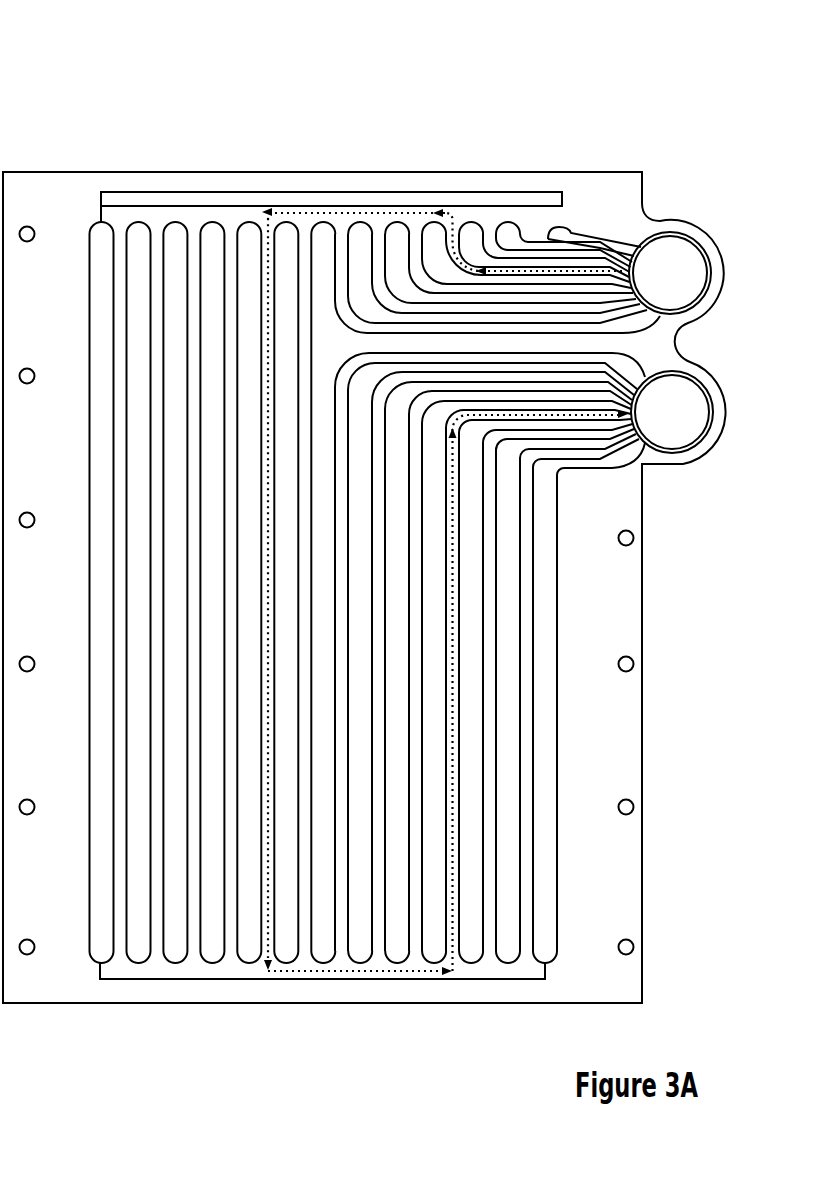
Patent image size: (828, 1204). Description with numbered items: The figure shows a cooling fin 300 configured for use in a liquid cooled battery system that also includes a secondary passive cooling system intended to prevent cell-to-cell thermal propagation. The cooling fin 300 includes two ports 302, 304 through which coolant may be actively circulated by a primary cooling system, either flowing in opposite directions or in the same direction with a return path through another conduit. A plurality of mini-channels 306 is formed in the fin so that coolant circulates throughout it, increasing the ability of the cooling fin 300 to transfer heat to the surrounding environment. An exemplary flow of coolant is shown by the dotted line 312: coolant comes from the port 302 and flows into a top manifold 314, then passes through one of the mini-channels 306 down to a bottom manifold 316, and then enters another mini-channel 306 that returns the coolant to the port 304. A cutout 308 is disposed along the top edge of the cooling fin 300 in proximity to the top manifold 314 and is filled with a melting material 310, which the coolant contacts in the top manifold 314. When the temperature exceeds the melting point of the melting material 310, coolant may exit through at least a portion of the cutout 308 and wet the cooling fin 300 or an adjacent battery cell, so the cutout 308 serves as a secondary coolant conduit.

The cooling fin 300 is at (92, 60).
The port 302 is at (680, 279).
The port 304 is at (680, 418).
The mini-channels 306 is at (378, 962).
The cutout 308 is at (278, 191).
The melting material 310 is at (398, 200).
The dotted line 312 is at (455, 210).
The top manifold 314 is at (492, 218).
The bottom manifold 316 is at (234, 972).